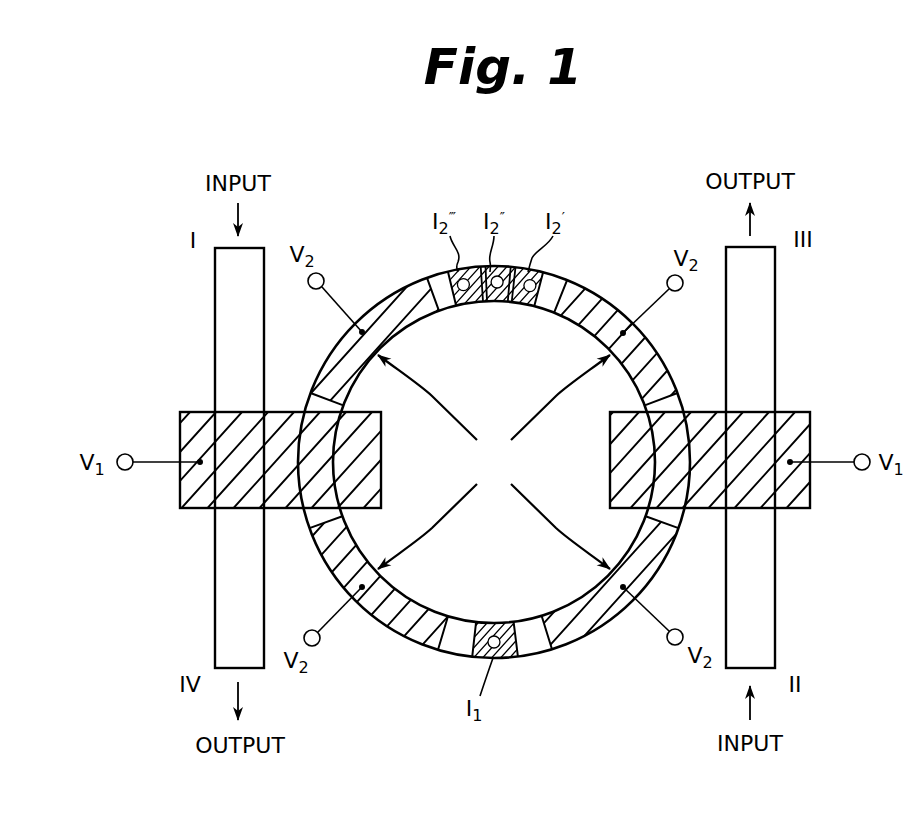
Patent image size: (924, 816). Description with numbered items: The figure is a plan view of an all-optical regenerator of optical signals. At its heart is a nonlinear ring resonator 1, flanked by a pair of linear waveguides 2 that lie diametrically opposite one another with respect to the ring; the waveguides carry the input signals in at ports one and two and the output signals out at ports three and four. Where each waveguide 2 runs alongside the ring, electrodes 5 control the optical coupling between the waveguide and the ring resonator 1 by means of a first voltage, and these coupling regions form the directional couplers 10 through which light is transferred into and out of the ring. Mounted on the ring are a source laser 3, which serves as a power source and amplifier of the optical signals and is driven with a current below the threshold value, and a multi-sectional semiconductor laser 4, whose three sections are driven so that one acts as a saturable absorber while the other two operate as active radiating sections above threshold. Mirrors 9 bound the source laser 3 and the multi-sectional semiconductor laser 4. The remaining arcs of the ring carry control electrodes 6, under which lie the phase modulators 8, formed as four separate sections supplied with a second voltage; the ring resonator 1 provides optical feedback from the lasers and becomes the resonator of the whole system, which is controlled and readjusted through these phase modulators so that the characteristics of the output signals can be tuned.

The nonlinear ring resonator 1 is at (593, 260).
The linear waveguides 2 is at (230, 612).
The source laser 3 is at (510, 662).
The multi-sectional semiconductor laser 4 is at (505, 266).
The electrodes 5 is at (190, 428).
The control electrodes 6 is at (391, 276).
The phase modulators 8 is at (494, 462).
The mirrors 9 is at (438, 273).
The directional couplers 10 is at (165, 508).